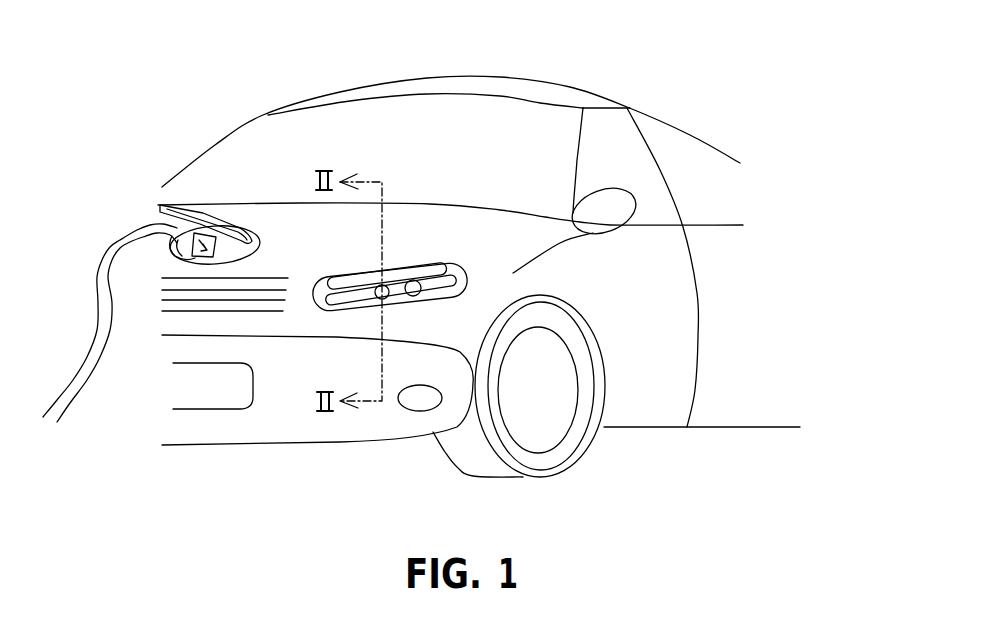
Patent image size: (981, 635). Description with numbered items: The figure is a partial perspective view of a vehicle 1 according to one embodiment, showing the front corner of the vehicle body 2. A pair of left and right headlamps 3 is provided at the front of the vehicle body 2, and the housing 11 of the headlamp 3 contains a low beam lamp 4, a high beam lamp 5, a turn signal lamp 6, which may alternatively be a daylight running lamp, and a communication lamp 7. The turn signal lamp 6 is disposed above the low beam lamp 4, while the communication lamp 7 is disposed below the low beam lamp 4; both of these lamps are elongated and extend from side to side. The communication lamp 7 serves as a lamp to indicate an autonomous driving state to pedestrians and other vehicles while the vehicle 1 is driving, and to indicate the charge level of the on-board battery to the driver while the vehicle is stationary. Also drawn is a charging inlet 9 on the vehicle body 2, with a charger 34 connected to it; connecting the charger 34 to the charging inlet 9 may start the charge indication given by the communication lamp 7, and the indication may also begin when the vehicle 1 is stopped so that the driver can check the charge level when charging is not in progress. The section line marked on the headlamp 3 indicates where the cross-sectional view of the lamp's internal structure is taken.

The vehicle 1 is at (254, 92).
The vehicle body 2 is at (500, 77).
The headlamp 3 is at (477, 249).
The low beam lamp 4 is at (378, 283).
The high beam lamp 5 is at (410, 278).
The turn signal lamp 6 is at (352, 272).
The communication lamp 7 is at (348, 312).
The charging inlet 9 is at (243, 242).
The housing 11 is at (437, 303).
The charger 34 is at (128, 245).